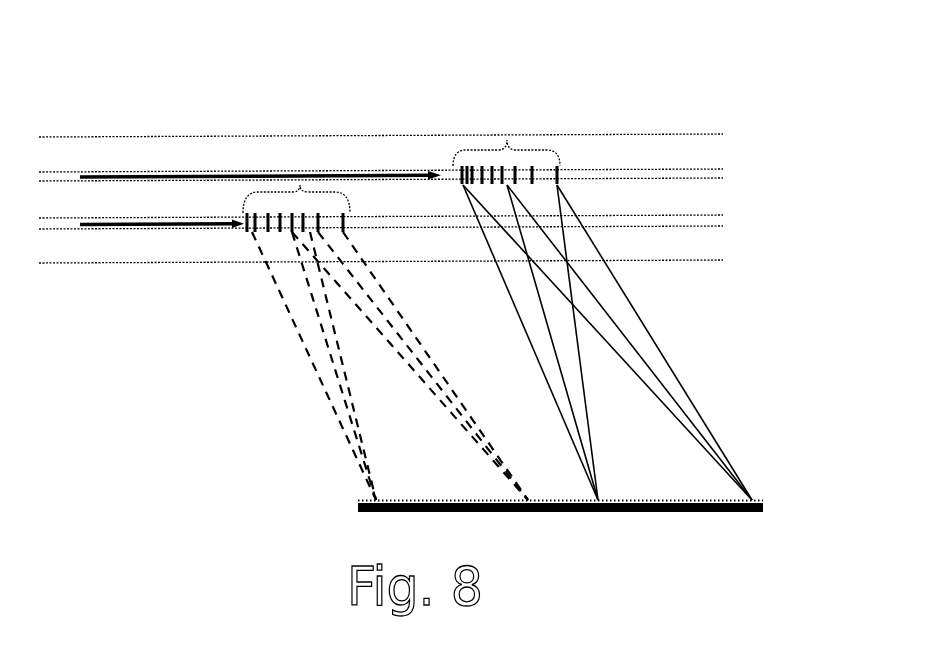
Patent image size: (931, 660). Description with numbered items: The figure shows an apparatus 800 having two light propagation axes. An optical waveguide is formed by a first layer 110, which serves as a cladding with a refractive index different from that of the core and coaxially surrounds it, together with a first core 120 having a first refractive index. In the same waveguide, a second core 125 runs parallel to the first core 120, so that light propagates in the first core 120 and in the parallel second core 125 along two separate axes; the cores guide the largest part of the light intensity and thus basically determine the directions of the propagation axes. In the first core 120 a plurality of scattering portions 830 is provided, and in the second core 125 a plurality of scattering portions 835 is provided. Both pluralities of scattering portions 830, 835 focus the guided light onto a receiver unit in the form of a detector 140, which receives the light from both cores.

The apparatus 800 is at (410, 296).
The first layer 110 is at (662, 134).
The first core 120 is at (710, 169).
The second core 125 is at (710, 216).
The scattering portions 835 is at (315, 187).
The scattering portions 830 is at (512, 142).
The detector 140 is at (697, 511).